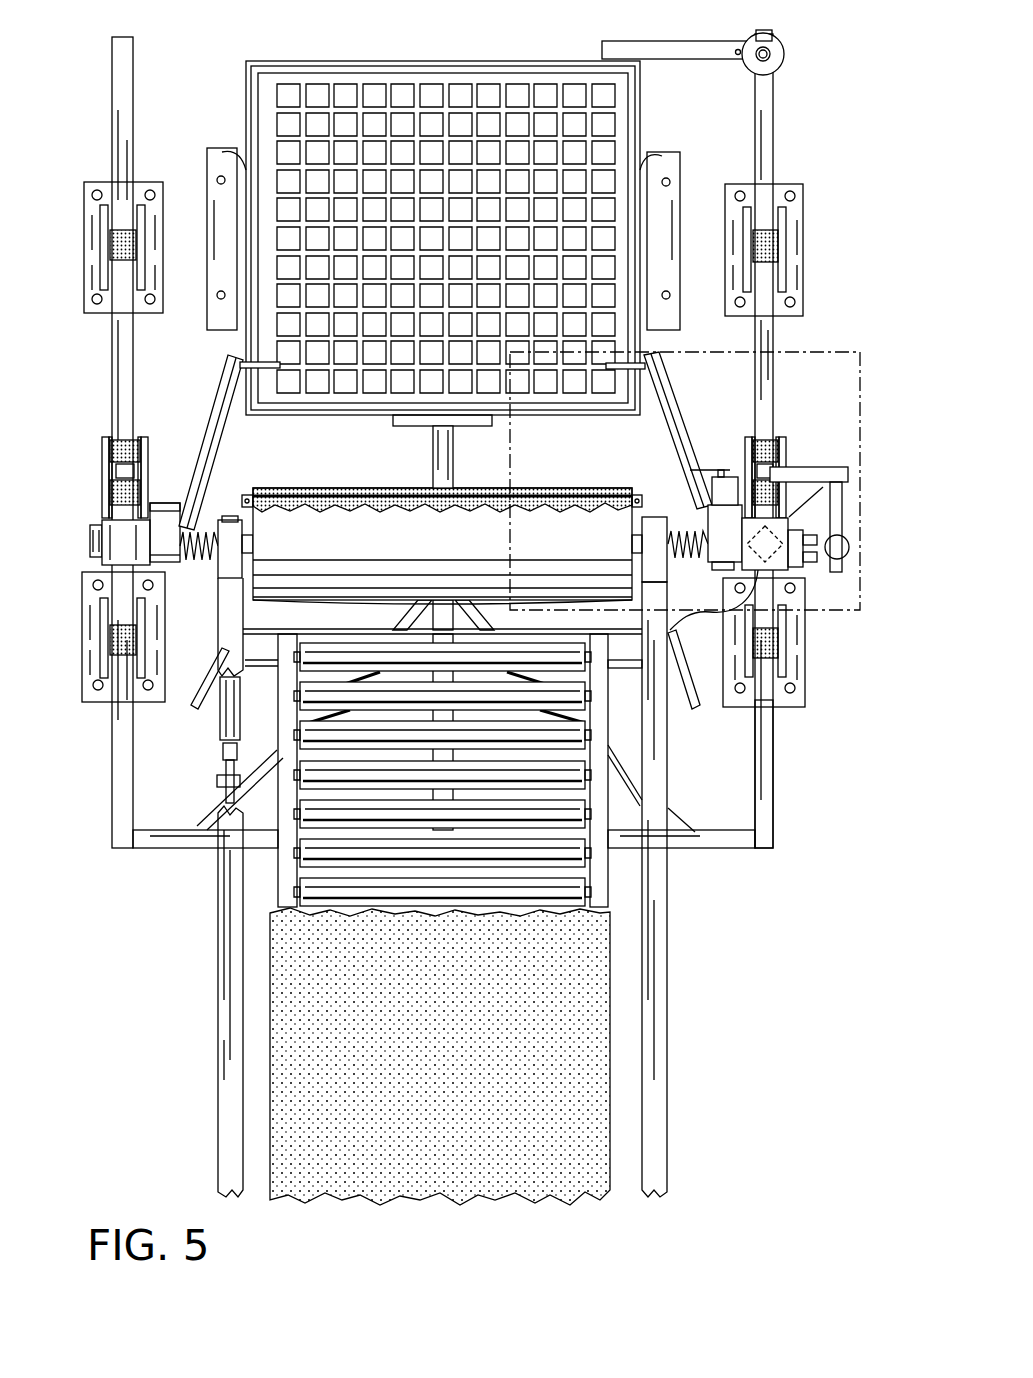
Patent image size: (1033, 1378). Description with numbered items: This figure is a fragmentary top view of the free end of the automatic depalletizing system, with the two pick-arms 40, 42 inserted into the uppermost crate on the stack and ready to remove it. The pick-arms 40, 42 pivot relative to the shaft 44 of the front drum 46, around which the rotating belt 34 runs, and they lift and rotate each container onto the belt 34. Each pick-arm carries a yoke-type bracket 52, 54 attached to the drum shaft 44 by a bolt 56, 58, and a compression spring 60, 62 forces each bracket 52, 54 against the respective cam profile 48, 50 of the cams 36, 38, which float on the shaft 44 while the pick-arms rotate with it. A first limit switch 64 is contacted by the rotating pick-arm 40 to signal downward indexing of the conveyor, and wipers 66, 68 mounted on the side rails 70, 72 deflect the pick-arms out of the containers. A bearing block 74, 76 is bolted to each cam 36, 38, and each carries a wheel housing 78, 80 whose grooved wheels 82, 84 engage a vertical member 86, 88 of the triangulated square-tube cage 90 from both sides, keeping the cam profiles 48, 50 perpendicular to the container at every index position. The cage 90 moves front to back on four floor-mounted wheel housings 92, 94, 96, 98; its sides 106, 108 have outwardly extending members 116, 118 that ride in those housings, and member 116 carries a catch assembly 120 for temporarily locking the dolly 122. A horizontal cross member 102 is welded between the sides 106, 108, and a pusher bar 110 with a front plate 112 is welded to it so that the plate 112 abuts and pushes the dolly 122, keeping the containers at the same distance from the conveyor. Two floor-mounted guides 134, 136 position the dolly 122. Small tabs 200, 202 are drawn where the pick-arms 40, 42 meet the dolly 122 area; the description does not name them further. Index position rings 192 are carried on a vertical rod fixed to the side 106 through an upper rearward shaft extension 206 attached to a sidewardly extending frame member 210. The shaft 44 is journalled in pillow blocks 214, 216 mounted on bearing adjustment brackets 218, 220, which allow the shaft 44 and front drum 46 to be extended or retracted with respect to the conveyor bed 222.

The rotating belt 34 is at (335, 488).
The cam 36 is at (772, 575).
The cam 38 is at (165, 520).
The pick-arm 40 is at (677, 395).
The pick-arm 42 is at (210, 414).
The shaft 44 is at (247, 498).
The front drum 46 is at (258, 490).
The cam profile 48 is at (722, 566).
The cam profile 50 is at (222, 565).
The yoke-type bracket 52 is at (655, 517).
The yoke-type bracket 54 is at (193, 535).
The bolt 56 is at (703, 555).
The bolt 58 is at (102, 540).
The compression spring 60 is at (708, 545).
The compression spring 62 is at (218, 598).
The first limit switch 64 is at (718, 478).
The wiper 66 is at (690, 700).
The wiper 68 is at (205, 690).
The side rail 70 is at (670, 745).
The side rail 72 is at (222, 735).
The bearing block 74 is at (806, 568).
The bearing block 76 is at (102, 560).
The wheel housing 78 is at (786, 455).
The wheel housing 80 is at (106, 470).
The grooved wheels 82 is at (776, 440).
The grooved wheels 84 is at (106, 450).
The vertical member 86 is at (758, 465).
The vertical member 88 is at (112, 475).
The triangulated square-tube cage 90 is at (776, 765).
The wheel housing 92 is at (786, 240).
The wheel housing 94 is at (787, 660).
The wheel housing 96 is at (100, 640).
The wheel housing 98 is at (108, 240).
The horizontal cross member 102 is at (700, 850).
The side 106 is at (774, 835).
The side 108 is at (112, 828).
The pusher bar 110 is at (433, 470).
The front plate 112 is at (453, 432).
The member 116 is at (775, 108).
The member 118 is at (112, 75).
The catch assembly 120 is at (662, 40).
The dolly 122 is at (395, 60).
The guide 134 is at (218, 168).
The guide 136 is at (672, 170).
The rings 192 is at (850, 548).
The right tab 200 is at (645, 366).
The left tab 202 is at (240, 364).
The upper rearward shaft extension 206 is at (843, 522).
The sidewardly extending frame member 210 is at (850, 472).
The pillow block 214 is at (605, 566).
The pillow block 216 is at (258, 560).
The bearing adjustment bracket 218 is at (705, 612).
The bearing adjustment bracket 220 is at (250, 592).
The conveyor bed 222 is at (592, 880).